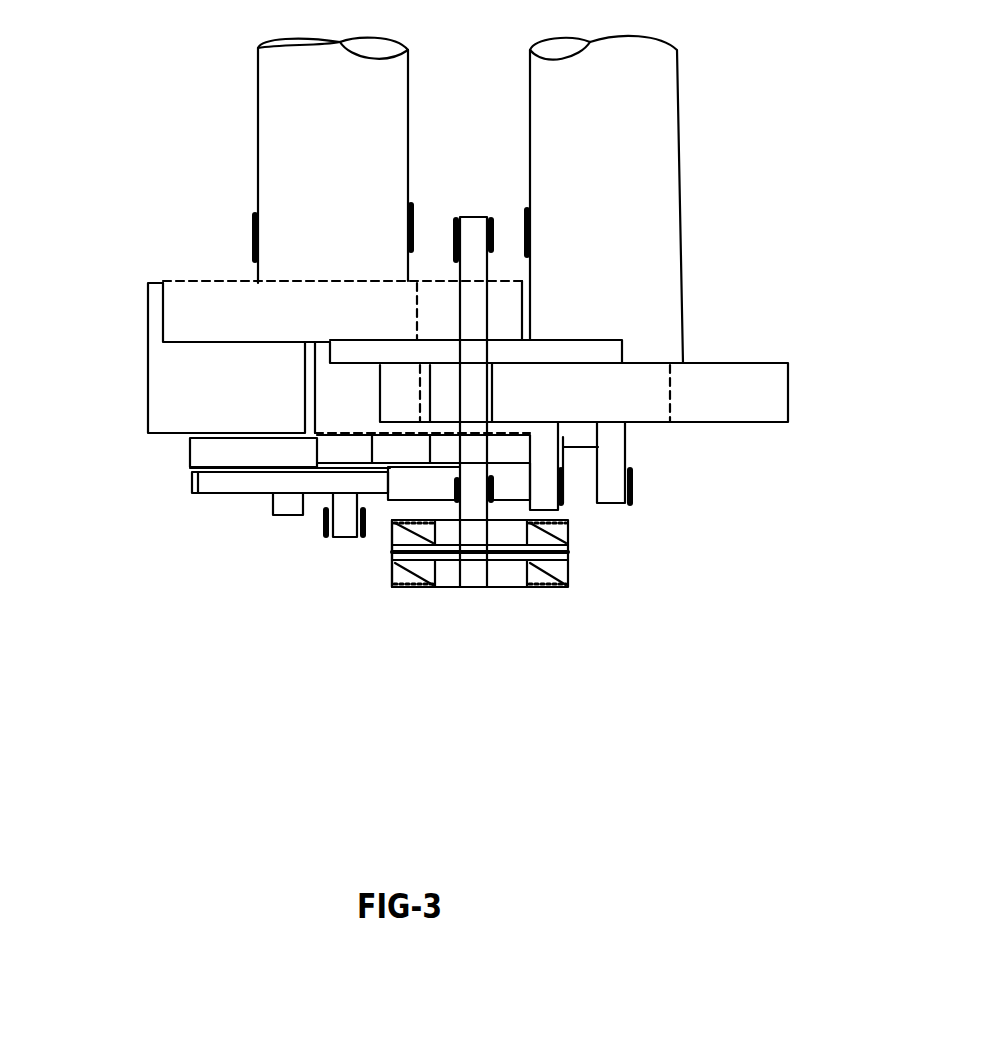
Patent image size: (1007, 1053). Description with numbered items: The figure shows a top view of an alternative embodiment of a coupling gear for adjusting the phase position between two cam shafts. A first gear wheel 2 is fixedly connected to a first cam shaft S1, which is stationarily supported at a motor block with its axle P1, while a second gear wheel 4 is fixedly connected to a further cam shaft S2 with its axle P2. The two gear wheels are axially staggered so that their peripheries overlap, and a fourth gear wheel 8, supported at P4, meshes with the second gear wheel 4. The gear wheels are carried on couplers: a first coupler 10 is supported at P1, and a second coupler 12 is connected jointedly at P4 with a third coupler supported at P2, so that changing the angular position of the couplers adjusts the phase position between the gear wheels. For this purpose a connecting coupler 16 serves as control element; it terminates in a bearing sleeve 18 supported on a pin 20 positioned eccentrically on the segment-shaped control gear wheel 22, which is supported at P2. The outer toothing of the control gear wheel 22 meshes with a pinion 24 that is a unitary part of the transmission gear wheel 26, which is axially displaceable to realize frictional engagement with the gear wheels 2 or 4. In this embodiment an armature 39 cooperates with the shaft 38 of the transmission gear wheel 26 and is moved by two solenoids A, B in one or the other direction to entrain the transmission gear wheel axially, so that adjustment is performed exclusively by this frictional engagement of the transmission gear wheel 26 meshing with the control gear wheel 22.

The cam shaft S2 is at (282, 113).
The first cam shaft S1 is at (648, 123).
The second gear wheel 4 is at (228, 308).
The transmission gear wheel 26 is at (557, 350).
The pinion 24 is at (493, 448).
The fourth gear wheel 8 is at (187, 392).
The first gear wheel 2 is at (765, 400).
The control gear wheel 22 is at (210, 449).
The bearing sleeve 18 is at (195, 482).
The pin 20 is at (228, 478).
The joint axle P4 is at (283, 515).
The axle P2 is at (337, 537).
The second coupler 12 is at (407, 477).
The connecting coupler 16 is at (412, 560).
The solenoid A is at (415, 587).
The shaft 38 is at (478, 510).
The armature 39 is at (533, 587).
The solenoid B is at (565, 545).
The first coupler 10 is at (575, 450).
The axle P1 is at (618, 503).